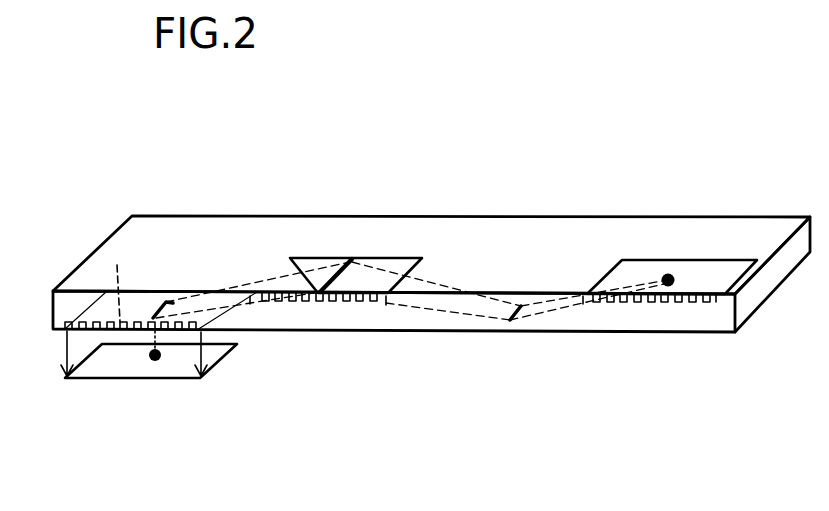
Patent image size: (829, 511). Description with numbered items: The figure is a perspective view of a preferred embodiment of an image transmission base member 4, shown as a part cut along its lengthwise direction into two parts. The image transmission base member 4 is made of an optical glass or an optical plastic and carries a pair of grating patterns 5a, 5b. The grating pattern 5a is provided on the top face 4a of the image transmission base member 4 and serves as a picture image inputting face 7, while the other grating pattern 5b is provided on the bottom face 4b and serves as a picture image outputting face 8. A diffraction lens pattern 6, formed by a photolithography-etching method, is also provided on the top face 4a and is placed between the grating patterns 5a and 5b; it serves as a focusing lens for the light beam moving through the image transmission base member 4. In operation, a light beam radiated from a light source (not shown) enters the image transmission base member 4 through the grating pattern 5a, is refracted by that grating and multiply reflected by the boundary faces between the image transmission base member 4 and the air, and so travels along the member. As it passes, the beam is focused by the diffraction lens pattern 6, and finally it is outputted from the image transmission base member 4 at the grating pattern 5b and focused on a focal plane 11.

The image transmission base member 4 is at (512, 245).
The top face 4a is at (257, 232).
The bottom face 4b is at (330, 332).
The diffraction lens pattern 6 is at (368, 283).
The picture image inputting face 7 is at (698, 277).
The grating pattern 5a is at (665, 302).
The grating pattern 5b is at (120, 333).
The picture image outputting face 8 is at (117, 265).
The focal plane 11 is at (110, 369).